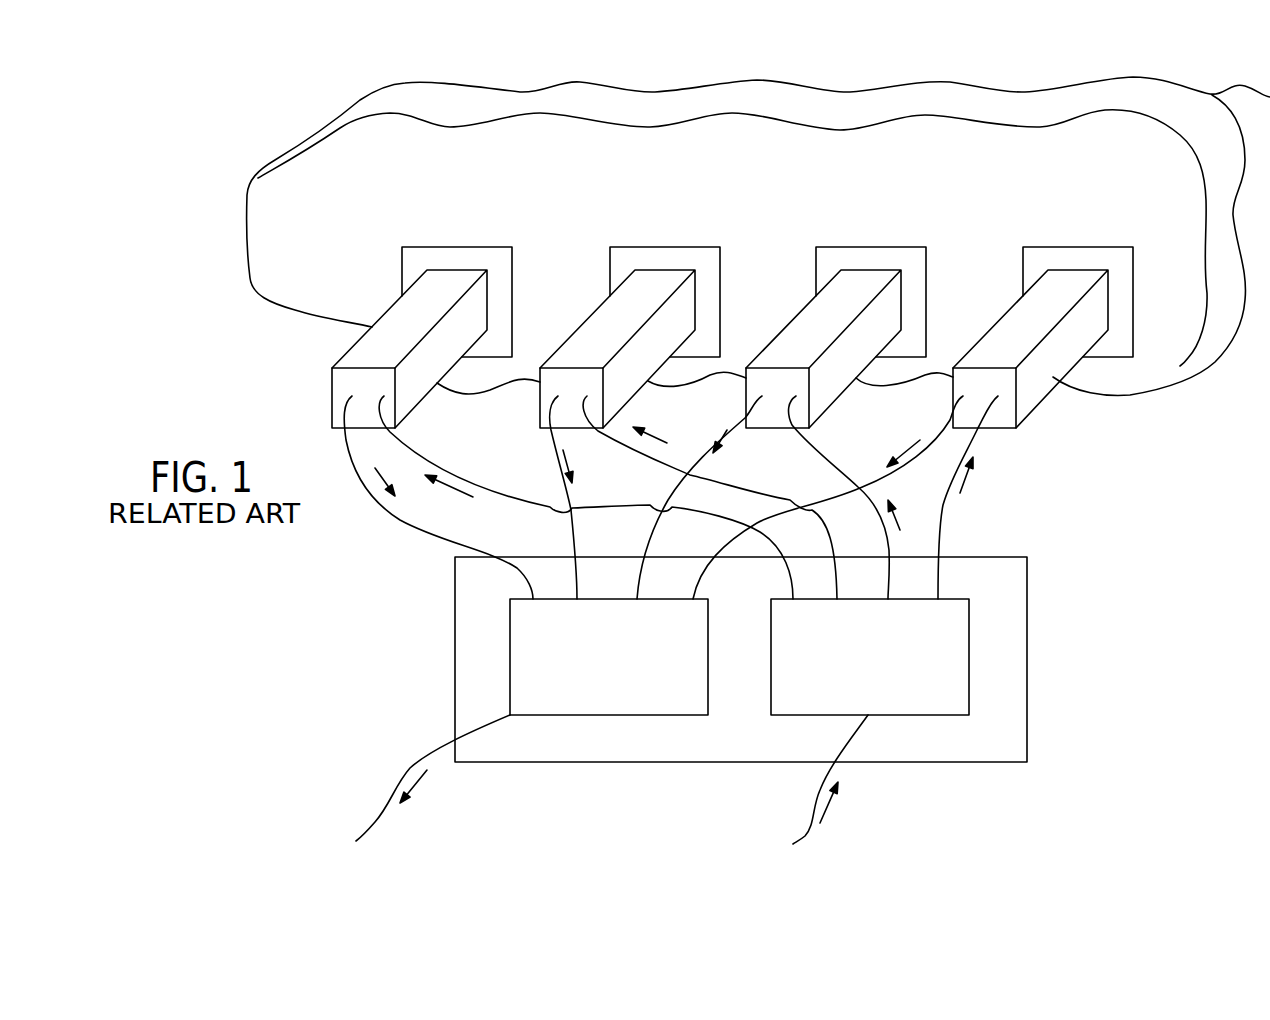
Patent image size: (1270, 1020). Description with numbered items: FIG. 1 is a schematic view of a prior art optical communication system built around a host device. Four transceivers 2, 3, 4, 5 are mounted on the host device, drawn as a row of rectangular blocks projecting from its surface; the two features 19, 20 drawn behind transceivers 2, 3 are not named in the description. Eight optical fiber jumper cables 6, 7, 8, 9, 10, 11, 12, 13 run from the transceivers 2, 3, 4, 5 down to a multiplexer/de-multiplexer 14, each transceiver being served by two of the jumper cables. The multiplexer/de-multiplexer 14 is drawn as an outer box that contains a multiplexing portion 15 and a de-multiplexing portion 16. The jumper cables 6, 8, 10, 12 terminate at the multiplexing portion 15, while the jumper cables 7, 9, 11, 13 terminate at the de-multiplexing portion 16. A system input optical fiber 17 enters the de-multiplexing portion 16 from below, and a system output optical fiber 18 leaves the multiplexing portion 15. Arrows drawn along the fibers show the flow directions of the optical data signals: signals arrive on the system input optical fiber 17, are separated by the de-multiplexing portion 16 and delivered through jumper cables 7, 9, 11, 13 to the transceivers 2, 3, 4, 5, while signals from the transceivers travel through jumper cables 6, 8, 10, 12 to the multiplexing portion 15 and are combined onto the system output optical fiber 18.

The transceiver 2 is at (392, 305).
The transceiver 3 is at (584, 323).
The transceiver 4 is at (797, 306).
The transceiver 5 is at (1003, 309).
The optical fiber jumper cable 6 is at (402, 522).
The optical fiber jumper cable 7 is at (440, 457).
The optical fiber jumper cable 8 is at (553, 445).
The optical fiber jumper cable 9 is at (608, 431).
The optical fiber jumper cable 10 is at (720, 432).
The optical fiber jumper cable 11 is at (813, 441).
The optical fiber jumper cable 12 is at (938, 432).
The optical fiber jumper cable 13 is at (968, 441).
The multiplexer/de-multiplexer 14 is at (1027, 577).
The multiplexing portion 15 is at (510, 650).
The de-multiplexing portion 16 is at (970, 663).
The system input optical fiber 17 is at (815, 792).
The system output optical fiber 18 is at (394, 795).
The mounting window 19 is at (428, 255).
The mounting window 20 is at (633, 256).